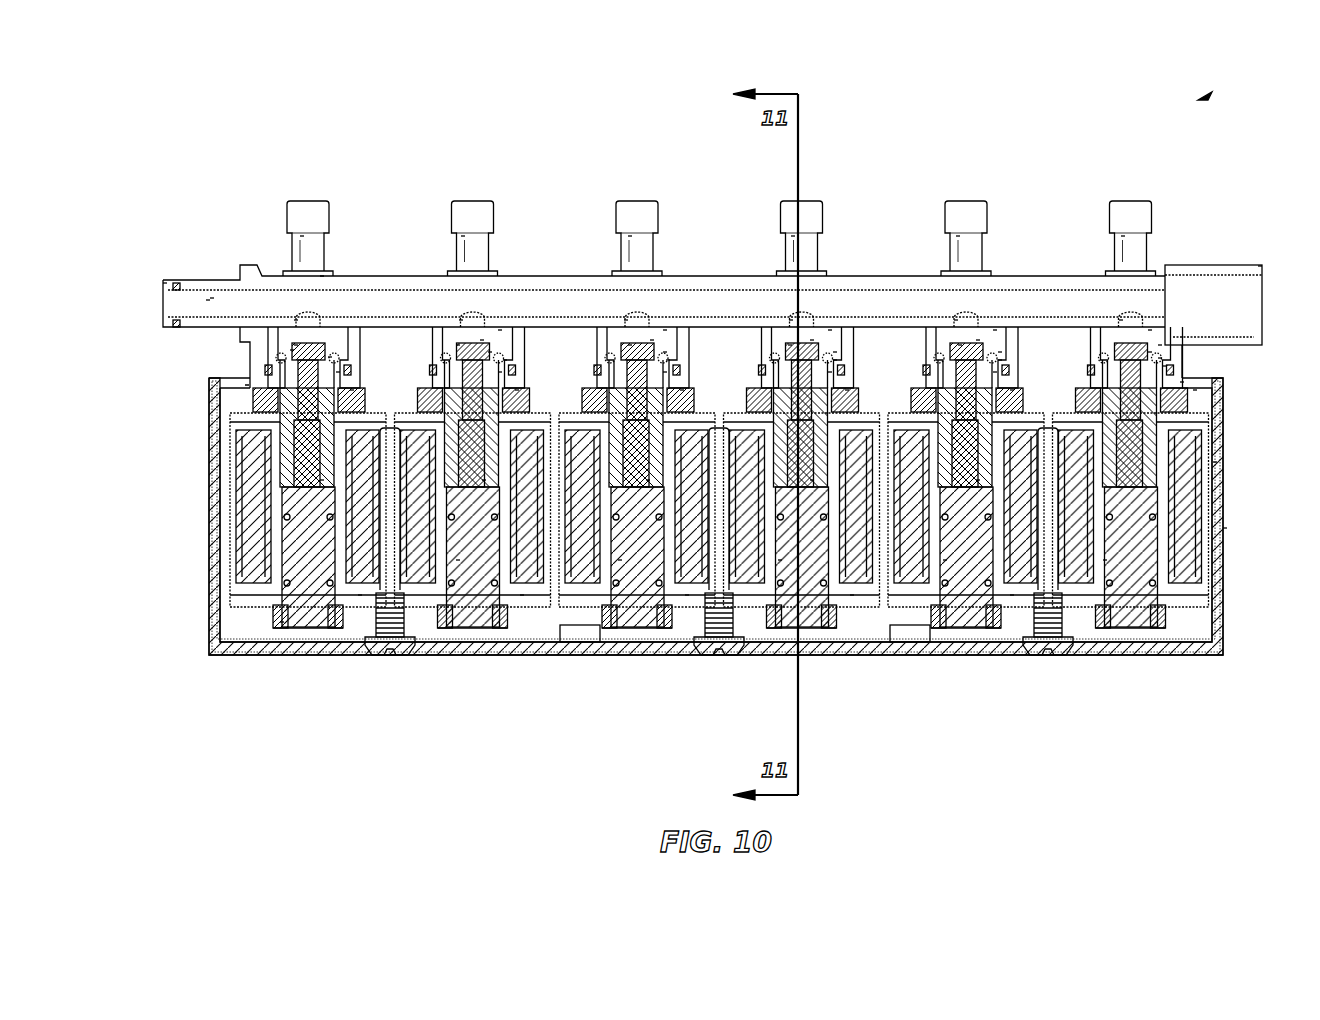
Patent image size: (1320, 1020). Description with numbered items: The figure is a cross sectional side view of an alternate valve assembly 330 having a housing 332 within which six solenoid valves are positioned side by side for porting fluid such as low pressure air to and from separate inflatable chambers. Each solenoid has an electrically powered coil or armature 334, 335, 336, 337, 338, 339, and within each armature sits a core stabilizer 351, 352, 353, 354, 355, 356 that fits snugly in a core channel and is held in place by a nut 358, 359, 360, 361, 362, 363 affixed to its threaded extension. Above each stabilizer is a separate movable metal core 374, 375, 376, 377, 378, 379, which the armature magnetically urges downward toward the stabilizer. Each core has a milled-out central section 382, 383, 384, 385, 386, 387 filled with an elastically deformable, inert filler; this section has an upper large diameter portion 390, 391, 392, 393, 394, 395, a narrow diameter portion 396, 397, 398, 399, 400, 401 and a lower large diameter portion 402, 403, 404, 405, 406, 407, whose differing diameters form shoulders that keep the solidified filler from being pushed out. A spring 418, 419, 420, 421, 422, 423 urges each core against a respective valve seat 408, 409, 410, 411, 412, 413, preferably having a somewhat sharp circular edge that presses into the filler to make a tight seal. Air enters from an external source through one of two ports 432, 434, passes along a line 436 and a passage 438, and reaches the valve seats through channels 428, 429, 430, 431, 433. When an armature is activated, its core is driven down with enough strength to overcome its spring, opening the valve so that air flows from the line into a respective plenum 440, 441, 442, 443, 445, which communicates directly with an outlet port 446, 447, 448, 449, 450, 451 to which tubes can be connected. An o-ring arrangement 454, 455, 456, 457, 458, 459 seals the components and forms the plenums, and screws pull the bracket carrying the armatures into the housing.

The valve assembly 330 is at (1207, 97).
The housing 332 is at (1225, 528).
The coil or armature 334 is at (240, 500).
The coil or armature 335 is at (322, 480).
The coil or armature 336 is at (484, 480).
The coil or armature 337 is at (648, 480).
The coil or armature 338 is at (812, 480).
The coil or armature 339 is at (978, 480).
The core stabilizer 351 is at (292, 562).
The core stabilizer 352 is at (456, 562).
The core stabilizer 353 is at (621, 562).
The core stabilizer 354 is at (785, 562).
The core stabilizer 355 is at (950, 562).
The core stabilizer 356 is at (1114, 562).
The nut 358 is at (282, 622).
The nut 359 is at (458, 560).
The nut 360 is at (620, 560).
The nut 361 is at (780, 560).
The nut 362 is at (945, 560).
The nut 363 is at (1105, 560).
The movable core 374 is at (322, 278).
The movable core 375 is at (500, 330).
The movable core 376 is at (665, 330).
The movable core 377 is at (830, 330).
The movable core 378 is at (995, 330).
The movable core 379 is at (1150, 330).
The central section 382 is at (296, 320).
The central section 383 is at (461, 320).
The central section 384 is at (626, 320).
The central section 385 is at (791, 320).
The central section 386 is at (956, 320).
The central section 387 is at (1121, 320).
The upper large diameter portion 390 is at (296, 345).
The upper large diameter portion 391 is at (482, 340).
The upper large diameter portion 392 is at (652, 340).
The upper large diameter portion 393 is at (812, 340).
The upper large diameter portion 394 is at (978, 340).
The upper large diameter portion 395 is at (1150, 352).
The narrow or thin diameter portion 396 is at (330, 357).
The seal 397 is at (505, 360).
The seal 398 is at (668, 360).
The seal 399 is at (835, 360).
The seal 400 is at (1000, 360).
The seal 401 is at (1160, 358).
The lower large diameter portion 402 is at (360, 595).
The lower large diameter portion 403 is at (522, 595).
The lower large diameter portion 404 is at (687, 595).
The lower large diameter portion 405 is at (852, 595).
The lower large diameter portion 406 is at (1012, 595).
The lower large diameter portion 407 is at (1215, 462).
The valve seat 408 is at (292, 350).
The valve seat 409 is at (458, 345).
The valve seat 410 is at (630, 345).
The valve seat 411 is at (790, 345).
The valve seat 412 is at (960, 345).
The valve seat 413 is at (1160, 345).
The spring 418 is at (212, 298).
The spring 419 is at (490, 352).
The spring 420 is at (665, 352).
The spring 421 is at (835, 352).
The spring 422 is at (1000, 352).
The spring 423 is at (1165, 366).
The channel 428 is at (302, 236).
The channel 429 is at (463, 236).
The channel 430 is at (630, 236).
The channel 431 is at (793, 236).
The port 432 is at (958, 236).
The channel 433 is at (1123, 236).
The port 434 is at (165, 283).
The line 436 is at (1262, 266).
The manifold passage 438 is at (208, 300).
The plenum 440 is at (352, 390).
The plenum 441 is at (517, 390).
The plenum 442 is at (682, 390).
The plenum 443 is at (847, 390).
The plenum 445 is at (1012, 390).
The outlet port 446 is at (318, 203).
The outlet port 447 is at (478, 203).
The outlet port 448 is at (643, 203).
The outlet port 449 is at (808, 203).
The outlet port 450 is at (973, 203).
The outlet port 451 is at (1138, 203).
The o-ring arrangement 454 is at (338, 372).
The o-ring arrangement 455 is at (500, 372).
The o-ring arrangement 456 is at (665, 372).
The o-ring arrangement 457 is at (830, 372).
The o-ring arrangement 458 is at (995, 372).
The o-ring arrangement 459 is at (1182, 382).